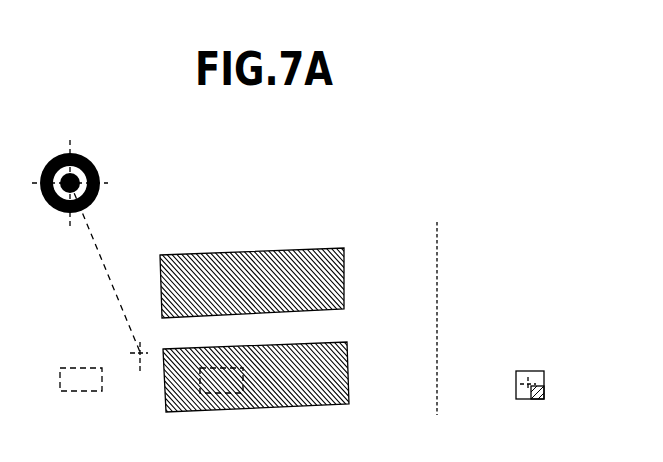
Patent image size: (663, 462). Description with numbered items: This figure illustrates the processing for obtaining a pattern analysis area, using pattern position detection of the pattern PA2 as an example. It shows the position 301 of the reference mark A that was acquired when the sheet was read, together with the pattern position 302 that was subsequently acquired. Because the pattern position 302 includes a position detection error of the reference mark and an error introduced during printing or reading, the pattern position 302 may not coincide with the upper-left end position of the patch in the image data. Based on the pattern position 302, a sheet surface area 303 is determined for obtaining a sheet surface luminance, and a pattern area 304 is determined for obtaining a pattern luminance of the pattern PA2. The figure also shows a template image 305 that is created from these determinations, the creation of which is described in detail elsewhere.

The position of the reference mark A 301 is at (85, 154).
The pattern position 302 is at (140, 352).
The sheet surface area 303 is at (70, 392).
The pattern area 304 is at (222, 394).
The template image 305 is at (529, 371).
The pattern PA2 is at (330, 342).